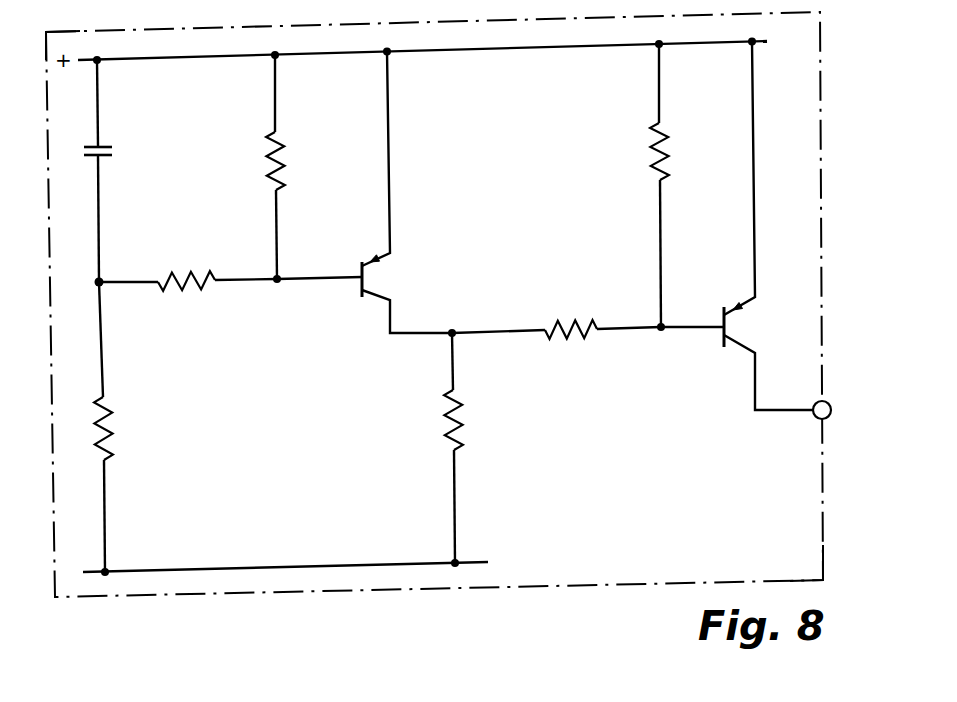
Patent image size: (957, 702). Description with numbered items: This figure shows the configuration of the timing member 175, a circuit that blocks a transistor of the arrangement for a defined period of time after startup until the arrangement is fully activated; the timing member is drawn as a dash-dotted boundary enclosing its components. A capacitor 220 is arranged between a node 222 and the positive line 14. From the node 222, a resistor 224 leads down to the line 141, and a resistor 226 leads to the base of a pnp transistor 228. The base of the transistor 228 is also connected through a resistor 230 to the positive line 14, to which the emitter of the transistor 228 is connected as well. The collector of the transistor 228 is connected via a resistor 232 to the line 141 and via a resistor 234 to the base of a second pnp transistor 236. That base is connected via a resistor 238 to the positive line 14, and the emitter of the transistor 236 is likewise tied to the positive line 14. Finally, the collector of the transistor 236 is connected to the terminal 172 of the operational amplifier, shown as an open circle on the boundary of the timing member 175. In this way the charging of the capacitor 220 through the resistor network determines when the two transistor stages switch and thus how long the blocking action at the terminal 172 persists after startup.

The positive line 14 is at (470, 51).
The line 141 is at (265, 568).
The terminal 172 is at (830, 404).
The timing member 175 is at (820, 127).
The capacitor 220 is at (116, 152).
The node 222 is at (99, 282).
The resistor 224 is at (112, 418).
The resistor 226 is at (203, 278).
The pnp transistor 228 is at (360, 268).
The resistor 230 is at (286, 155).
The resistor 232 is at (465, 412).
The resistor 234 is at (570, 322).
The pnp transistor 236 is at (722, 318).
The resistor 238 is at (650, 152).